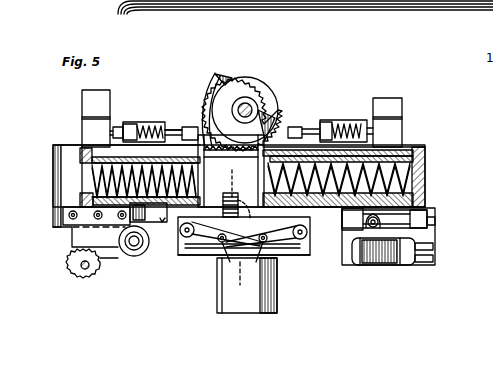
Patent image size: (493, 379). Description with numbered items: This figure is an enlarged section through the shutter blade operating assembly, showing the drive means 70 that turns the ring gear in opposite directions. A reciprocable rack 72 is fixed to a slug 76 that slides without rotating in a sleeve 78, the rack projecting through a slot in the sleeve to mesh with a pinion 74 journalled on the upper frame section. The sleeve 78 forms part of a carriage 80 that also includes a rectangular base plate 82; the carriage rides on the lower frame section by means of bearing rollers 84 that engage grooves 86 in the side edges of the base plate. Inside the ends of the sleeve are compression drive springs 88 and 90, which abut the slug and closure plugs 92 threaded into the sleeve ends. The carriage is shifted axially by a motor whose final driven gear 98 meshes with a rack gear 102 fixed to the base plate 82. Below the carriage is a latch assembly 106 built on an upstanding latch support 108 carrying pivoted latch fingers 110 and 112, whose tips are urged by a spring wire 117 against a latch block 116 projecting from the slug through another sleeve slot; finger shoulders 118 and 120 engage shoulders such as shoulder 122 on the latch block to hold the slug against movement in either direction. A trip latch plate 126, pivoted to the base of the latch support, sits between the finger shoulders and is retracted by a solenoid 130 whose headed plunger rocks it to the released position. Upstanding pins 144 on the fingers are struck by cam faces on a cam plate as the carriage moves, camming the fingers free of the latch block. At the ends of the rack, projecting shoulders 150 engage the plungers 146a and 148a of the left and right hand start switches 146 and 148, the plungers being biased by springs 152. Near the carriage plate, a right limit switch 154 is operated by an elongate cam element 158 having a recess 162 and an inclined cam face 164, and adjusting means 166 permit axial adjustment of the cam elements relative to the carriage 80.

The drive means 70 is at (342, 77).
The reciprocable rack 72 is at (213, 114).
The pinion 74 is at (282, 88).
The slug 76 is at (245, 167).
The sleeve 78 is at (396, 146).
The carriage 80 is at (52, 158).
The base plate 82 is at (62, 212).
The bearing rollers 84 is at (134, 256).
The grooves 86 is at (155, 228).
The compression drive spring 88 is at (80, 150).
The compression drive spring 90 is at (425, 178).
The closure plugs 92 is at (80, 165).
The final driven gear 98 is at (70, 276).
The rack gear 102 is at (112, 256).
The latch assembly 106 is at (330, 272).
The latch support 108 is at (182, 246).
The left hand latch finger 110 is at (218, 250).
The right hand latch finger 112 is at (262, 226).
The latch block 116 is at (223, 205).
The spring wire 117 is at (300, 240).
The shoulder 118 is at (232, 167).
The shoulder 120 is at (235, 182).
The shoulder 122 is at (186, 244).
The latch plate 126 is at (247, 285).
The solenoid 130 is at (275, 306).
The upstanding pins 144 is at (272, 262).
The left hand start switch 146 is at (100, 118).
The plunger 146a is at (182, 130).
The right hand start switch 148 is at (395, 112).
The plunger 148a is at (296, 126).
The projecting shoulders 150 is at (192, 128).
The springs 152 is at (148, 128).
The right limit switch 154 is at (410, 268).
The cam element 158 is at (420, 212).
The recess 162 is at (368, 228).
The inclined cam face 164 is at (377, 237).
The adjusting means 166 is at (436, 221).